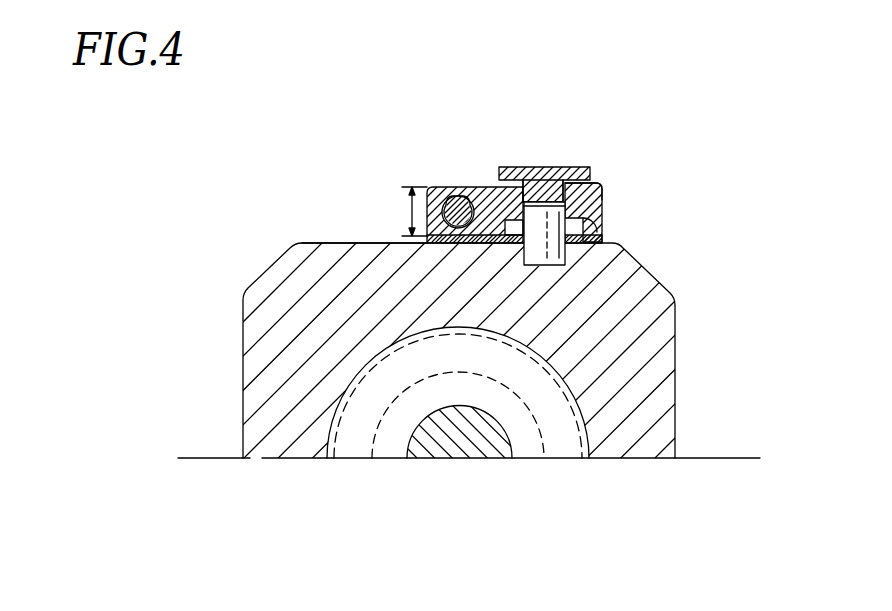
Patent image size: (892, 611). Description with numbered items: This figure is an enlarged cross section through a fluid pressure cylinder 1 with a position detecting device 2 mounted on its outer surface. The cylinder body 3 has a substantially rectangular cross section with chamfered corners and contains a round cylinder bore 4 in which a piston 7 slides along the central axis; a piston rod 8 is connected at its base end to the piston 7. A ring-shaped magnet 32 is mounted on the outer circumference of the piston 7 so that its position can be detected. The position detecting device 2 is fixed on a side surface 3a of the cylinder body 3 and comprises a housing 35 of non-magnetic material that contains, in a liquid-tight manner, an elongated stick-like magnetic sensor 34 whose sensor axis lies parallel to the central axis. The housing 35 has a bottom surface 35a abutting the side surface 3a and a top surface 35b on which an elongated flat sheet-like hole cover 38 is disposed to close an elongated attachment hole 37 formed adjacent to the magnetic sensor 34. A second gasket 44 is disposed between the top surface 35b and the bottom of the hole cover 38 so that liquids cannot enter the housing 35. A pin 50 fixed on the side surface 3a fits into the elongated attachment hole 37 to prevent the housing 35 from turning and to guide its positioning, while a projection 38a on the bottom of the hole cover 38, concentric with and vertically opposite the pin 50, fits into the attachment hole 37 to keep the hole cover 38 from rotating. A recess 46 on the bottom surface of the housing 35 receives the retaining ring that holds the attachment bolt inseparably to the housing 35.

The fluid pressure cylinder 1 is at (705, 350).
The position detecting device 2 is at (630, 138).
The cylinder body 3 is at (632, 412).
The side surface 3a is at (315, 243).
The cylinder bore 4 is at (574, 440).
The piston 7 is at (392, 438).
The piston rod 8 is at (458, 449).
The ring-shaped magnet 32 is at (357, 443).
The magnetic sensor 34 is at (461, 194).
The housing 35 is at (427, 188).
The bottom surface 35a is at (440, 246).
The top surface 35b is at (452, 190).
The elongated attachment hole 37 is at (567, 183).
The hole cover 38 is at (513, 167).
The projection 38a is at (543, 183).
The second gasket 44 is at (602, 184).
The recess 46 is at (602, 226).
The pin 50 is at (553, 252).